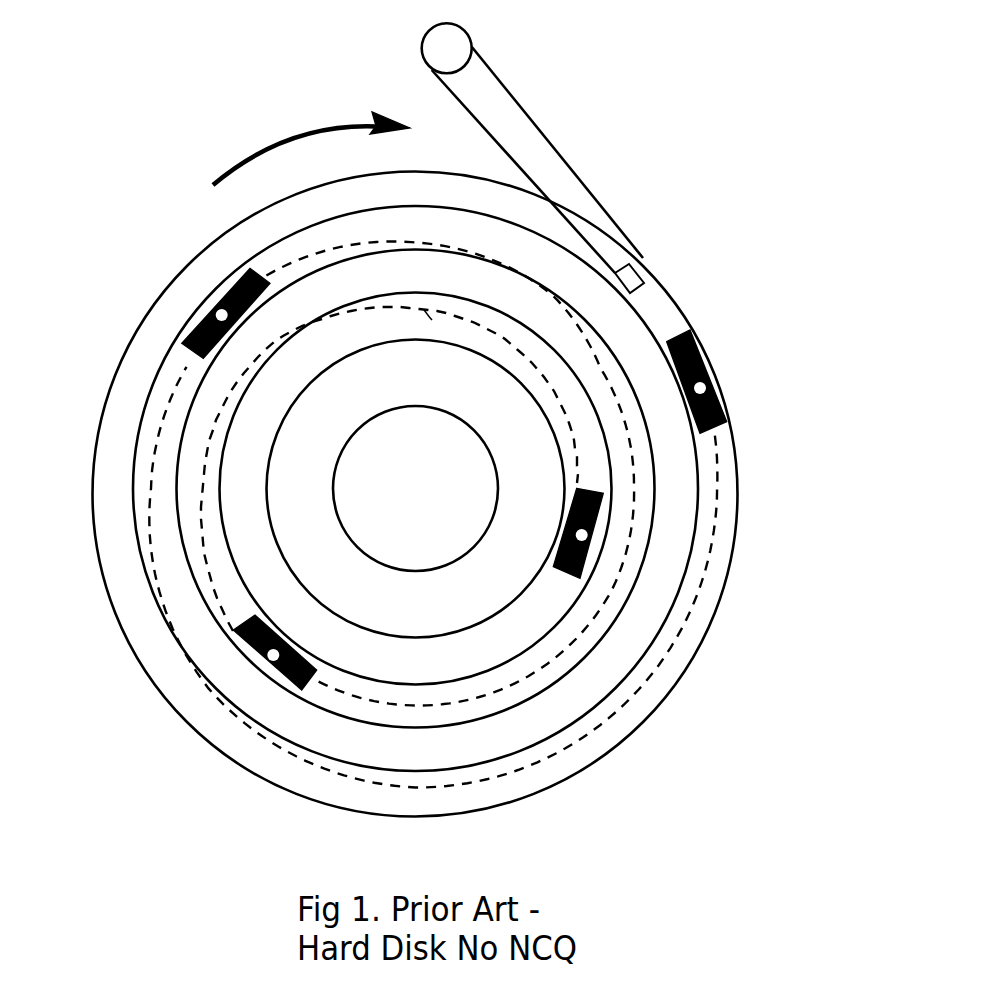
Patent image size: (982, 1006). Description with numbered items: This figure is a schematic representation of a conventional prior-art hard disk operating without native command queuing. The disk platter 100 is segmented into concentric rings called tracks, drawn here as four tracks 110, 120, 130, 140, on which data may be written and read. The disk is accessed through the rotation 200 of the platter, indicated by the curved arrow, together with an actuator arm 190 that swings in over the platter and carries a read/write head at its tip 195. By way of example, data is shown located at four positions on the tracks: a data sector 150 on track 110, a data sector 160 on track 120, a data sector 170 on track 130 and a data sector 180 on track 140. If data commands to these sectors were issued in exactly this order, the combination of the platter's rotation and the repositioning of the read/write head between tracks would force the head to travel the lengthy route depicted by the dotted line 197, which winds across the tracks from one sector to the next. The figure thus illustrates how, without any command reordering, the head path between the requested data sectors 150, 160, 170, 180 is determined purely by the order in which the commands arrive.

The disk platter 100 is at (678, 677).
The track 110 is at (503, 637).
The track 120 is at (467, 707).
The track 130 is at (548, 710).
The track 140 is at (510, 776).
The data sector 150 is at (574, 521).
The data sector 160 is at (268, 626).
The data sector 170 is at (212, 307).
The data sector 180 is at (722, 412).
The actuator arm 190 is at (505, 107).
The read/write head tip 195 is at (643, 267).
The dotted line path 197 is at (432, 320).
The rotation of the platter 200 is at (311, 135).